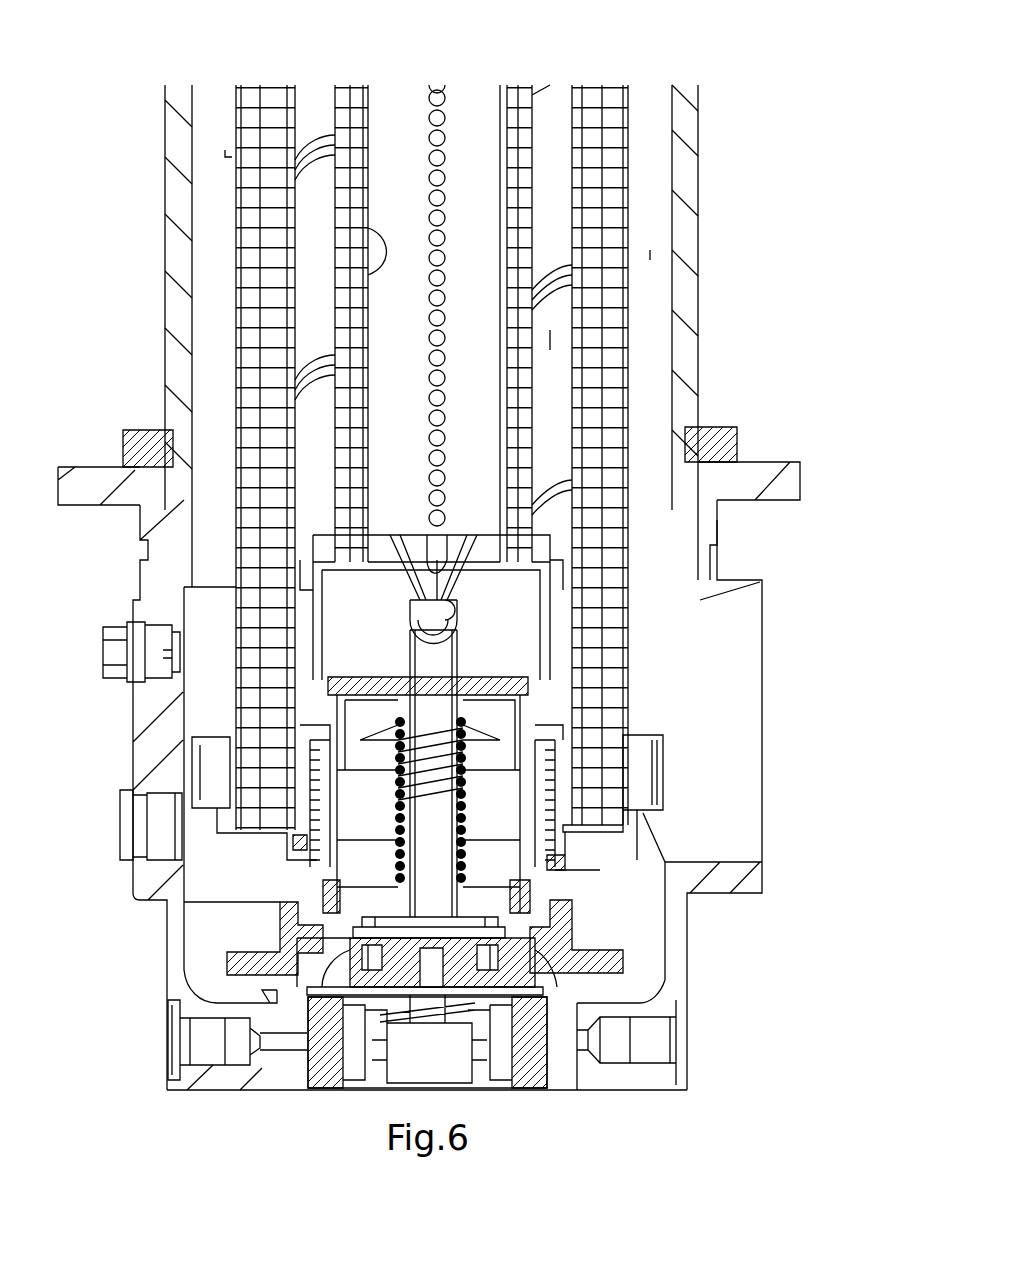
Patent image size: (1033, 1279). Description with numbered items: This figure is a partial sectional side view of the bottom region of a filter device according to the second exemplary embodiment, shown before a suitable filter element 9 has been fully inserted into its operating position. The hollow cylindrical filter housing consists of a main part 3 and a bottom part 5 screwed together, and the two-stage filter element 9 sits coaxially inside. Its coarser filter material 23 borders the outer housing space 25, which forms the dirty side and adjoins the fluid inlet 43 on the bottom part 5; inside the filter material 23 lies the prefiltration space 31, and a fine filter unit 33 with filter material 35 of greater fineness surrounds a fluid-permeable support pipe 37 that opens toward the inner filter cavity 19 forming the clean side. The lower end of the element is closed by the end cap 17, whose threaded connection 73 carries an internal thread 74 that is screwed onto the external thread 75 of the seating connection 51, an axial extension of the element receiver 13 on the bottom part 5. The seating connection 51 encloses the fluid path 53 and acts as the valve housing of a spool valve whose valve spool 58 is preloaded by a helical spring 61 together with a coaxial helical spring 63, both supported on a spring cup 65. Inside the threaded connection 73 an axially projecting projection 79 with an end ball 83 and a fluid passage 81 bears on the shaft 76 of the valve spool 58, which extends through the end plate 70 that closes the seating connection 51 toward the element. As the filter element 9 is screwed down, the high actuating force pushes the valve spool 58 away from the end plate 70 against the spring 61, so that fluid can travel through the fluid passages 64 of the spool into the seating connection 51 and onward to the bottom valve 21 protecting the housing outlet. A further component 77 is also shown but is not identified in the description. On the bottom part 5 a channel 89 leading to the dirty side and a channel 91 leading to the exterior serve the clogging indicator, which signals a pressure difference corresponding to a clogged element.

The main part 3 is at (176, 318).
The bottom part 5 is at (190, 1003).
The filter element 9 is at (651, 250).
The element receiver 13 is at (548, 942).
The end cap 17 is at (223, 822).
The inner filter cavity 19 is at (400, 196).
The bottom valve 21 is at (315, 990).
The filter material 23 is at (274, 98).
The outer housing space 25 is at (228, 152).
The prefiltration space 31 is at (550, 340).
The fine filter unit 33 is at (656, 100).
The filter material 35 is at (527, 403).
The support pipe 37 is at (362, 272).
The fluid inlet 43 is at (760, 600).
The seating connection 51 is at (310, 878).
The fluid path 53 is at (330, 740).
The valve spool 58 is at (428, 829).
The helical spring 61 is at (398, 793).
The helical spring 63 is at (460, 900).
The fluid passages 64 is at (478, 720).
The spring cup 65 is at (572, 903).
The end plate 70 is at (510, 700).
The threaded connection 73 is at (622, 620).
The internal thread 74 is at (548, 777).
The external thread 75 is at (580, 825).
The shaft 76 is at (410, 641).
The seal 77 is at (293, 848).
The projection 79 is at (410, 609).
The fluid passage 81 is at (545, 876).
The ball 83 is at (455, 560).
The channel 89 is at (677, 1005).
The channel 91 is at (583, 1040).